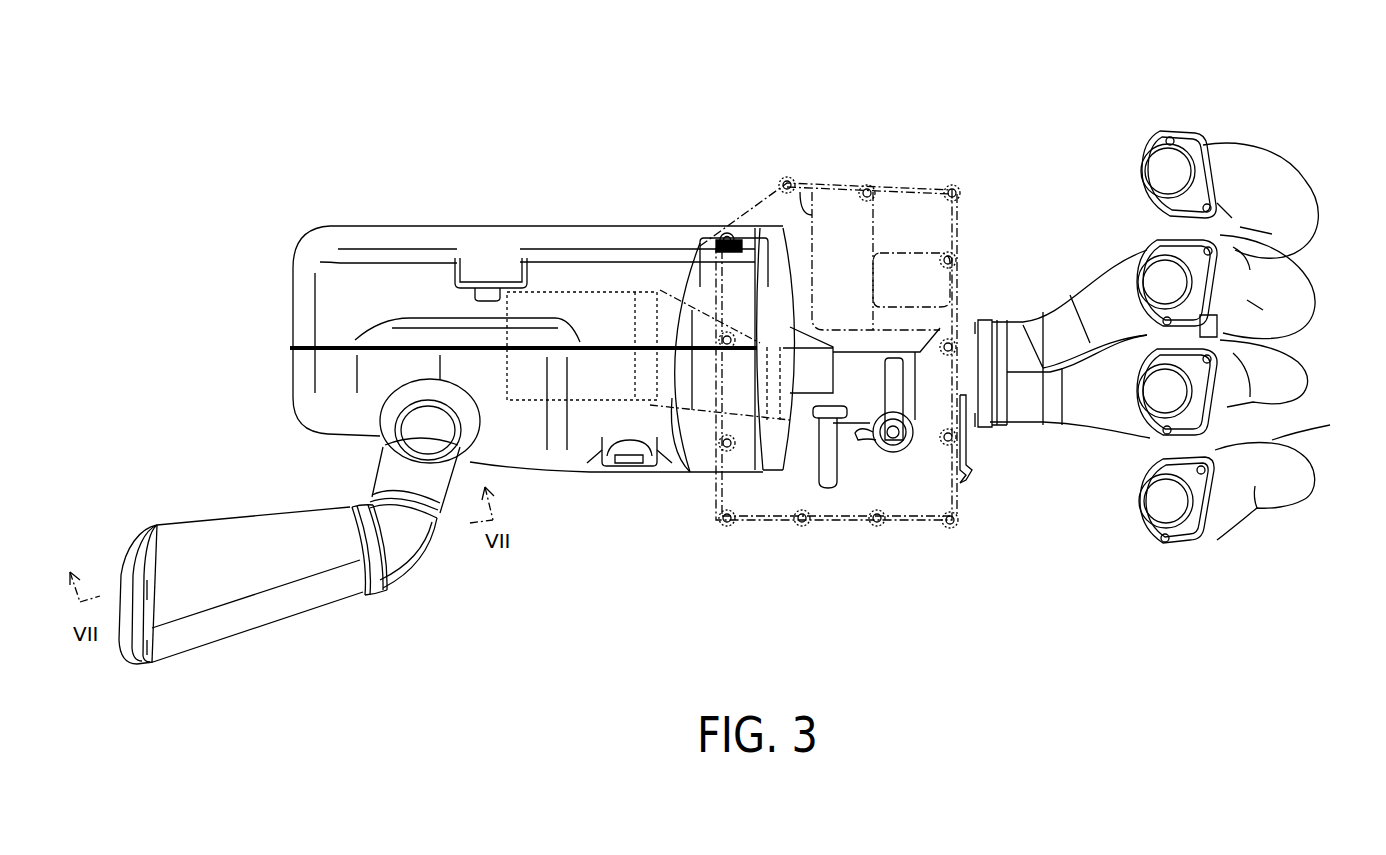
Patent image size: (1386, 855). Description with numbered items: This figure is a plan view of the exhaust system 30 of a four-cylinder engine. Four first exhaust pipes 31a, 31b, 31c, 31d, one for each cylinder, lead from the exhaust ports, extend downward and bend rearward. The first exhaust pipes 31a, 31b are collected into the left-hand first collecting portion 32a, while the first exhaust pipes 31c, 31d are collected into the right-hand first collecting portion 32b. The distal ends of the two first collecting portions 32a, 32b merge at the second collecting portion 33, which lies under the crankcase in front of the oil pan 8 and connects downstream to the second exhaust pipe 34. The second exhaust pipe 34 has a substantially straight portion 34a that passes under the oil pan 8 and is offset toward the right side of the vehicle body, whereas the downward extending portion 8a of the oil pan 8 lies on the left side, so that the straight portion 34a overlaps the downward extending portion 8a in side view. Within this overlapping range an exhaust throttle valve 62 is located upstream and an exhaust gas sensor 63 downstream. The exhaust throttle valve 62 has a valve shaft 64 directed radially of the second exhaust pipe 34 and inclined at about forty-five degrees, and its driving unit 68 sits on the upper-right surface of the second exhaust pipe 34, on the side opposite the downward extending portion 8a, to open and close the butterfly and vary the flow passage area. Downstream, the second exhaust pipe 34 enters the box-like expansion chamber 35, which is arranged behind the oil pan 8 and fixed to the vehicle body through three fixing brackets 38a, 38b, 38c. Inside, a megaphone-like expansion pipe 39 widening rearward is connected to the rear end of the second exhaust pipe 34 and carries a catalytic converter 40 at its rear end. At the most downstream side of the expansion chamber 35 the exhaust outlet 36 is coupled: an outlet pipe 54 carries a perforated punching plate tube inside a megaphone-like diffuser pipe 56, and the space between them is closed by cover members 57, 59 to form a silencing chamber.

The exhaust system 30 is at (727, 102).
The oil pan 8 is at (934, 184).
The downward extending portion 8a is at (800, 178).
The expansion chamber 35 is at (375, 226).
The fixing bracket 38c is at (470, 275).
The catalytic converter 40 is at (563, 294).
The expansion pipe 39 is at (665, 400).
The fixing bracket 38b is at (700, 238).
The fixing bracket 38a is at (627, 470).
The second exhaust pipe 34 is at (843, 348).
The substantially straight portion 34a is at (795, 540).
The second collecting portion 33 is at (978, 330).
The first collecting portion 32a is at (1100, 288).
The first collecting portion 32b is at (1117, 415).
The first exhaust pipe 31a is at (1305, 183).
The first exhaust pipe 31b is at (1310, 285).
The first exhaust pipe 31c is at (1310, 375).
The first exhaust pipe 31d is at (1308, 492).
The driving unit 68 is at (878, 414).
The valve shaft 64 is at (908, 452).
The exhaust gas sensor 63 is at (829, 489).
The exhaust throttle valve 62 is at (890, 455).
The exhaust outlet 36 is at (185, 510).
The outlet pipe 54 is at (372, 467).
The diffuser pipe 56 is at (272, 628).
The cover member 57 is at (364, 596).
The cover member 59 is at (128, 668).